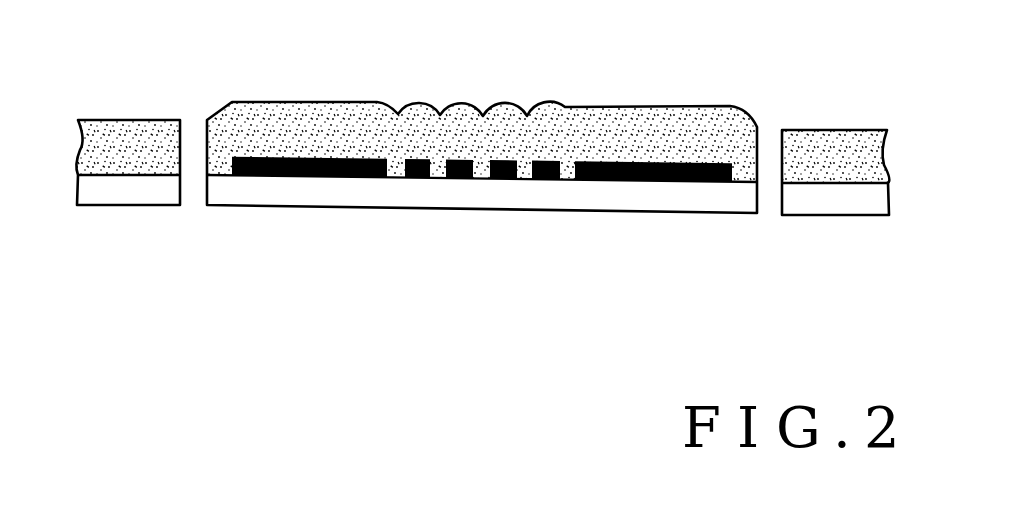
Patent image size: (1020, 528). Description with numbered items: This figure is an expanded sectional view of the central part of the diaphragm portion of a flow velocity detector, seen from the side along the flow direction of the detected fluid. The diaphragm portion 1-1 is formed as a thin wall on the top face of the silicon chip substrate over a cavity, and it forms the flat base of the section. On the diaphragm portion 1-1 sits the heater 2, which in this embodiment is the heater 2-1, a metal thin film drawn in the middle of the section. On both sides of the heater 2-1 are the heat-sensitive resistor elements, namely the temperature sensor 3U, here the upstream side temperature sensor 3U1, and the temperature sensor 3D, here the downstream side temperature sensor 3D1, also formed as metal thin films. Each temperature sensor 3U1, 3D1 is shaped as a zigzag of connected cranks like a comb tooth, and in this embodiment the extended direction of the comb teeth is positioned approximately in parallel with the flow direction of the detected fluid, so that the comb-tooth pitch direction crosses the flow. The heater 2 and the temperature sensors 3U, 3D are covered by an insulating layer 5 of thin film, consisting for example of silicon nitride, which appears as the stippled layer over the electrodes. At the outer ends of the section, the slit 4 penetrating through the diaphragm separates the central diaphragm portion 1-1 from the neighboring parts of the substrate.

The diaphragm portion 1-1 is at (408, 195).
The heater 2 is at (482, 254).
The heater 2-1 is at (498, 180).
The heat-sensitive resistor element 3U is at (309, 248).
The upstream side temperature sensor 3U1 is at (287, 180).
The heat-sensitive resistor element 3D is at (653, 227).
The downstream side temperature sensor 3D1 is at (655, 183).
The slit 4 is at (195, 195).
The insulating layer 5 is at (503, 117).